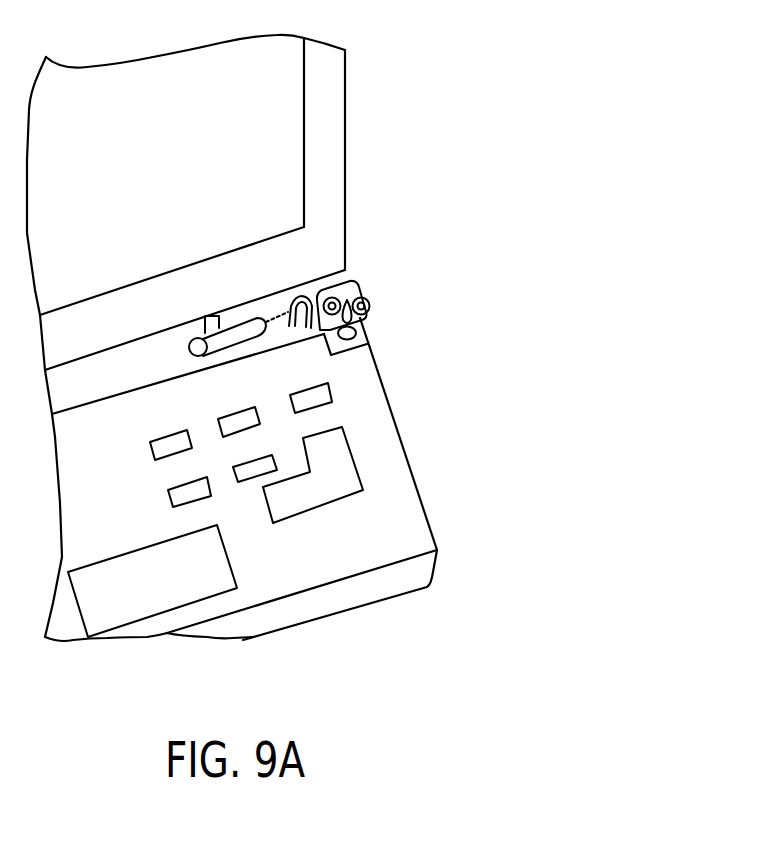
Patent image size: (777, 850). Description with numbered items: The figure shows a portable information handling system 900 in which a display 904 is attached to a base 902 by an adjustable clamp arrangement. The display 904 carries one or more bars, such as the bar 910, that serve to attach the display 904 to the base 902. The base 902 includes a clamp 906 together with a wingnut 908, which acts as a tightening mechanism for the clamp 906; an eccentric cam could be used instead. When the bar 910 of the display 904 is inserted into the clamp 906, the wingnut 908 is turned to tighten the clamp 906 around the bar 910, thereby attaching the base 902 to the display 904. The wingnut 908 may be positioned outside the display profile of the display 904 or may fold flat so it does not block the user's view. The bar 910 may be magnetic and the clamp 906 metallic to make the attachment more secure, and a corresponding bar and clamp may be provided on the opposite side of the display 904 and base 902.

The portable information handling system 900 is at (580, 162).
The base 902 is at (402, 492).
The display 904 is at (330, 152).
The clamp 906 is at (343, 283).
The wingnut 908 is at (372, 315).
The bar 910 is at (195, 347).